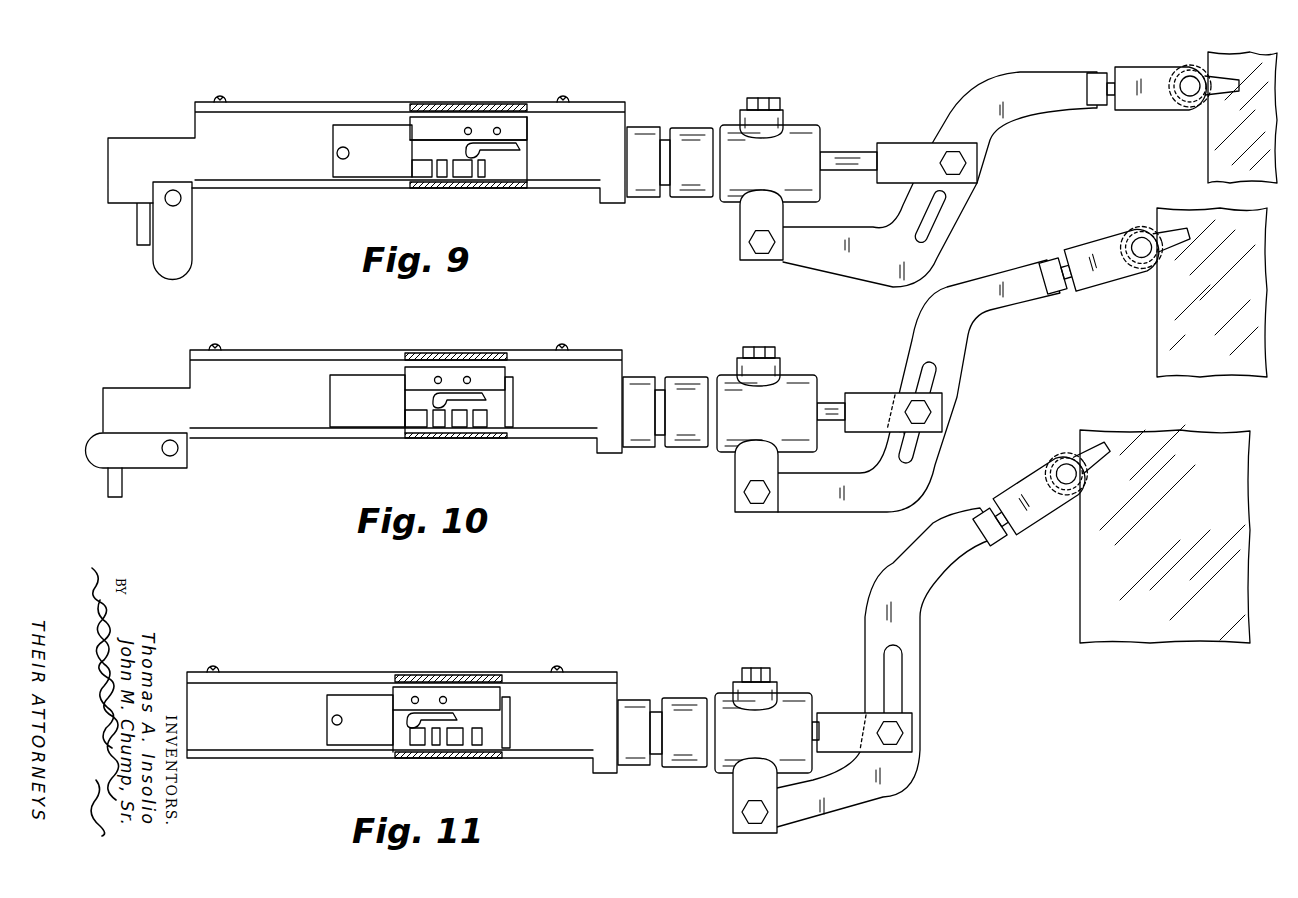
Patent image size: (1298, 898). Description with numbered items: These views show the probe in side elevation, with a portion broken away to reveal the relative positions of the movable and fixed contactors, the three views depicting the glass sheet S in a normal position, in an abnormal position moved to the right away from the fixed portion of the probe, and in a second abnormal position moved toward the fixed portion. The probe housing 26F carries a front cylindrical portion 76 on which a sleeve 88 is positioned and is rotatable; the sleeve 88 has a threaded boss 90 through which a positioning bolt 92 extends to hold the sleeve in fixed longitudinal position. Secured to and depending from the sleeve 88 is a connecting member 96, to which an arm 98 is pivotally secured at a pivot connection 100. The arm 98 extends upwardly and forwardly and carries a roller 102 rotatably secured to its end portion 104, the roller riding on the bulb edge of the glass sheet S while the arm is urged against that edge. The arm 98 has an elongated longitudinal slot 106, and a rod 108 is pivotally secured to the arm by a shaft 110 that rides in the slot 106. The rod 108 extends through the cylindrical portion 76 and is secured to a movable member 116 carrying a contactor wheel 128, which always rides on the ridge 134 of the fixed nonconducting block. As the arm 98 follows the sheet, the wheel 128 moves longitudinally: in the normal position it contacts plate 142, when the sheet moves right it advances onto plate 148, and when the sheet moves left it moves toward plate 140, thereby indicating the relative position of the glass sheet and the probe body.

In FIG. 9, the tool body housing 26F is at (622, 104).
In FIG. 10, the tool body housing 26F is at (585, 353).
In FIG. 11, the tool body housing 26F is at (580, 673).
In FIG. 9, the front cylindrical portion 76 is at (700, 126).
In FIG. 10, the front cylindrical portion 76 is at (695, 376).
In FIG. 11, the front cylindrical portion 76 is at (680, 697).
In FIG. 9, the sleeve 88 is at (822, 140).
In FIG. 10, the sleeve 88 is at (818, 392).
In FIG. 11, the sleeve 88 is at (800, 693).
In FIG. 9, the threaded boss 90 is at (785, 121).
In FIG. 10, the threaded boss 90 is at (781, 372).
In FIG. 11, the threaded boss 90 is at (740, 685).
In FIG. 9, the positioning bolt 92 is at (773, 97).
In FIG. 10, the positioning bolt 92 is at (768, 347).
In FIG. 11, the positioning bolt 92 is at (762, 668).
In FIG. 9, the connecting member 96 is at (740, 213).
In FIG. 10, the connecting member 96 is at (735, 464).
In FIG. 11, the connecting member 96 is at (733, 790).
In FIG. 9, the arm 98 is at (968, 195).
In FIG. 10, the arm 98 is at (972, 355).
In FIG. 11, the arm 98 is at (936, 594).
In FIG. 9, the pivot connection 100 is at (748, 241).
In FIG. 10, the pivot connection 100 is at (743, 490).
In FIG. 11, the pivot connection 100 is at (741, 818).
In FIG. 9, the roller 102 is at (1177, 102).
In FIG. 10, the roller 102 is at (1124, 234).
In FIG. 11, the roller 102 is at (1041, 460).
In FIG. 9, the end portion 104 is at (1109, 74).
In FIG. 10, the end portion 104 is at (1094, 280).
In FIG. 11, the end portion 104 is at (1030, 529).
In FIG. 9, the elongated longitudinal slot 106 is at (936, 222).
In FIG. 10, the elongated longitudinal slot 106 is at (921, 452).
In FIG. 11, the elongated longitudinal slot 106 is at (905, 665).
In FIG. 9, the rod 108 is at (846, 172).
In FIG. 10, the rod 108 is at (829, 423).
In FIG. 11, the rod 108 is at (818, 718).
In FIG. 9, the shaft 110 is at (967, 161).
In FIG. 10, the shaft 110 is at (932, 411).
In FIG. 11, the shaft 110 is at (905, 732).
In FIG. 9, the movable member 116 is at (488, 128).
In FIG. 10, the movable member 116 is at (481, 375).
In FIG. 11, the movable member 116 is at (475, 697).
In FIG. 9, the contactor wheel 128 is at (479, 157).
In FIG. 10, the contactor wheel 128 is at (456, 428).
In FIG. 11, the contactor wheel 128 is at (420, 746).
In FIG. 9, the ridge portion 134 is at (468, 128).
In FIG. 11, the plate 140 is at (402, 750).
In FIG. 10, the second plate 142 is at (424, 428).
In FIG. 9, the plate 148 is at (465, 178).
In FIG. 9, the glass sheet S is at (1208, 160).
In FIG. 10, the glass sheet S is at (1157, 343).
In FIG. 11, the glass sheet S is at (1080, 583).